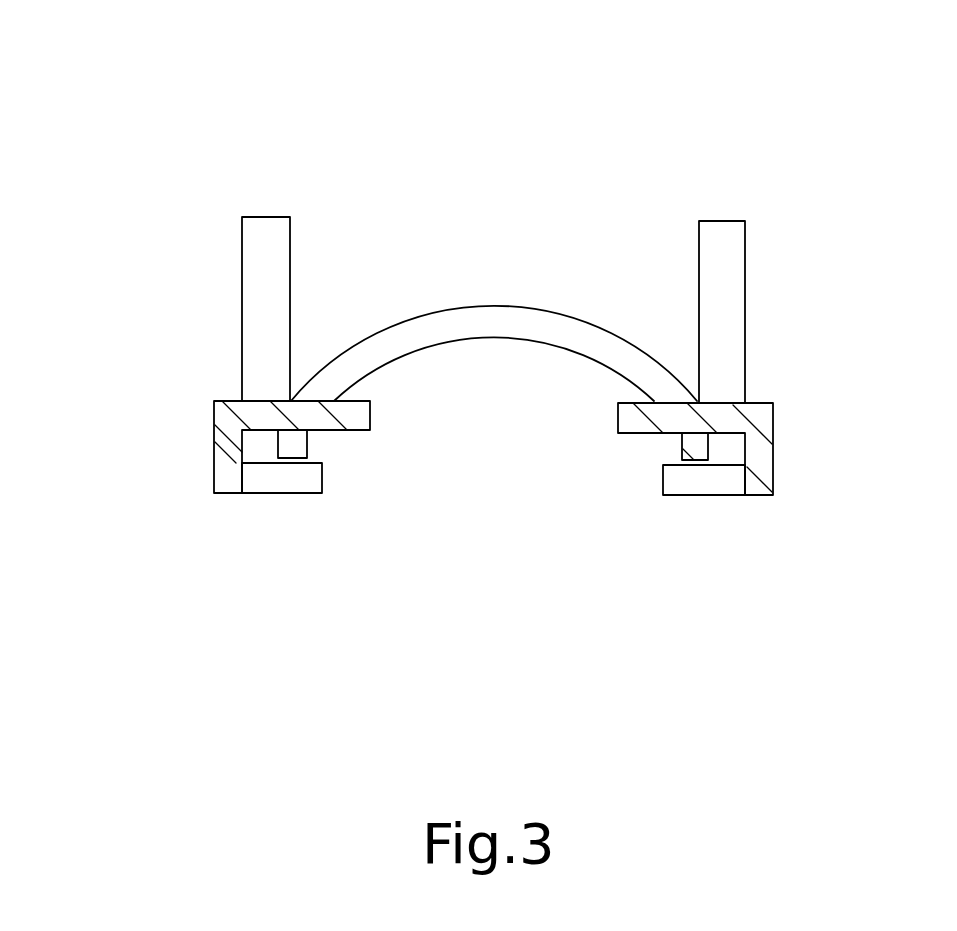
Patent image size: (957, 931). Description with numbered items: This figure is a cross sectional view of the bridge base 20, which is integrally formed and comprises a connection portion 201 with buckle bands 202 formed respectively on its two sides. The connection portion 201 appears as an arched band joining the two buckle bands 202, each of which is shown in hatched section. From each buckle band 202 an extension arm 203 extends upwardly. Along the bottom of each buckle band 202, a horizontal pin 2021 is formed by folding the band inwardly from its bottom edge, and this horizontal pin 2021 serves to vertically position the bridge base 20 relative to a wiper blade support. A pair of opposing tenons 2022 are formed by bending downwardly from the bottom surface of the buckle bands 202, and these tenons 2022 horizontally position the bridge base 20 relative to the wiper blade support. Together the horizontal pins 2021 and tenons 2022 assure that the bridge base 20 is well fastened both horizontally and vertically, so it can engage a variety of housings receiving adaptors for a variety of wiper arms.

The bridge base 20 is at (282, 175).
The connection portion 201 is at (505, 320).
The buckle band 202 is at (227, 435).
The extension arm 203 is at (241, 292).
The horizontal pin 2021 is at (288, 480).
The tenon 2022 is at (293, 440).